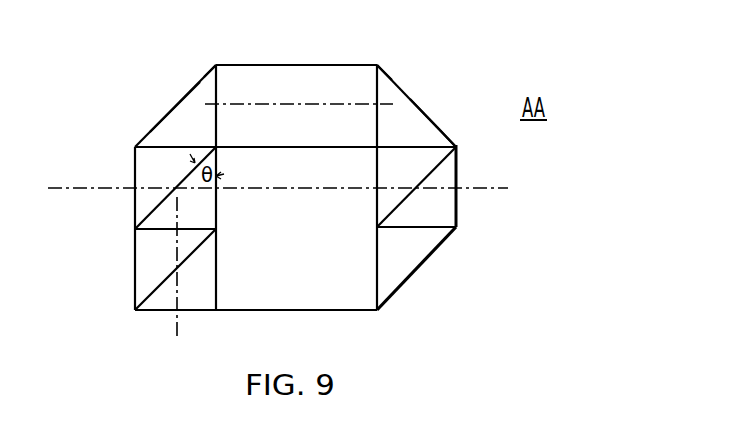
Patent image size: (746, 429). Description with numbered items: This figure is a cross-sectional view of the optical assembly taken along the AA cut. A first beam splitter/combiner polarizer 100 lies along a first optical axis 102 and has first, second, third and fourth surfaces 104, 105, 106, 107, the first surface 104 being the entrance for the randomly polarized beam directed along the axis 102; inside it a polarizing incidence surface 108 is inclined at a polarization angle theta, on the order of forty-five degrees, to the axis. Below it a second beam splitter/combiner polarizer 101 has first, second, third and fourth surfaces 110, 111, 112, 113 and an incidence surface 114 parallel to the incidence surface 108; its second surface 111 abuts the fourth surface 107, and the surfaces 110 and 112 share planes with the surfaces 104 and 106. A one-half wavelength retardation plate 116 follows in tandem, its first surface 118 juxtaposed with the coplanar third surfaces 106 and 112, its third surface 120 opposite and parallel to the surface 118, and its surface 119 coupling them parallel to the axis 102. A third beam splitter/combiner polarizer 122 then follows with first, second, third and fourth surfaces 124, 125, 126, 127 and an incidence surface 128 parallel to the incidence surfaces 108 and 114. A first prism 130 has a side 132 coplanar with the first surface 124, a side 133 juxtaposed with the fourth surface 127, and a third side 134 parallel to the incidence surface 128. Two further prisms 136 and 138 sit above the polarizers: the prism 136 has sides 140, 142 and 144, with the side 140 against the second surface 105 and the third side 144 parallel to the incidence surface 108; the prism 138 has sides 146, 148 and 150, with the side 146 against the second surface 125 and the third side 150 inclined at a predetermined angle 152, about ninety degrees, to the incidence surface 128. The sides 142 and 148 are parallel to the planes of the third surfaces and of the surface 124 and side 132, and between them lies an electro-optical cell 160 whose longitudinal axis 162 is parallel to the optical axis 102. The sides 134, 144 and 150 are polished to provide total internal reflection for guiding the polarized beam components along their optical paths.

The first beam splitter/combiner polarizer 100 is at (135, 165).
The second beam splitter/combiner polarizer 101 is at (167, 310).
The first optical axis 102 is at (50, 188).
The first surface 104 is at (135, 199).
The second surface 105 is at (164, 150).
The third surface 106 is at (216, 201).
The fourth surface 107 is at (155, 226).
The polarizing incidence surface 108 is at (217, 160).
The first surface 110 is at (146, 278).
The second surface 111 is at (136, 252).
The third surface 112 is at (216, 278).
The fourth surface 113 is at (203, 310).
The incidence surface 114 is at (216, 234).
The one-half wavelength retardation plate 116 is at (309, 268).
The first surface 118 is at (216, 228).
The second surface 119 is at (297, 147).
The third surface 120 is at (377, 210).
The third beam splitter/combiner polarizer 122 is at (457, 214).
The first surface 124 is at (370, 172).
The second surface 125 is at (402, 147).
The third surface 126 is at (458, 196).
The fourth surface 127 is at (396, 222).
The incidence surface 128 is at (450, 150).
The first prism 130 is at (400, 273).
The side 132 is at (378, 284).
The side 133 is at (417, 228).
The third side 134 is at (431, 257).
The prism 136 is at (198, 90).
The prism 138 is at (403, 90).
The side 140 is at (198, 147).
The side 142 is at (216, 76).
The third side 144 is at (168, 110).
The side 146 is at (388, 146).
The side 148 is at (392, 78).
The third side 150 is at (427, 110).
The predetermined angle 152 is at (449, 131).
The electro-optical cell 160 is at (300, 94).
The longitudinal axis 162 is at (362, 102).